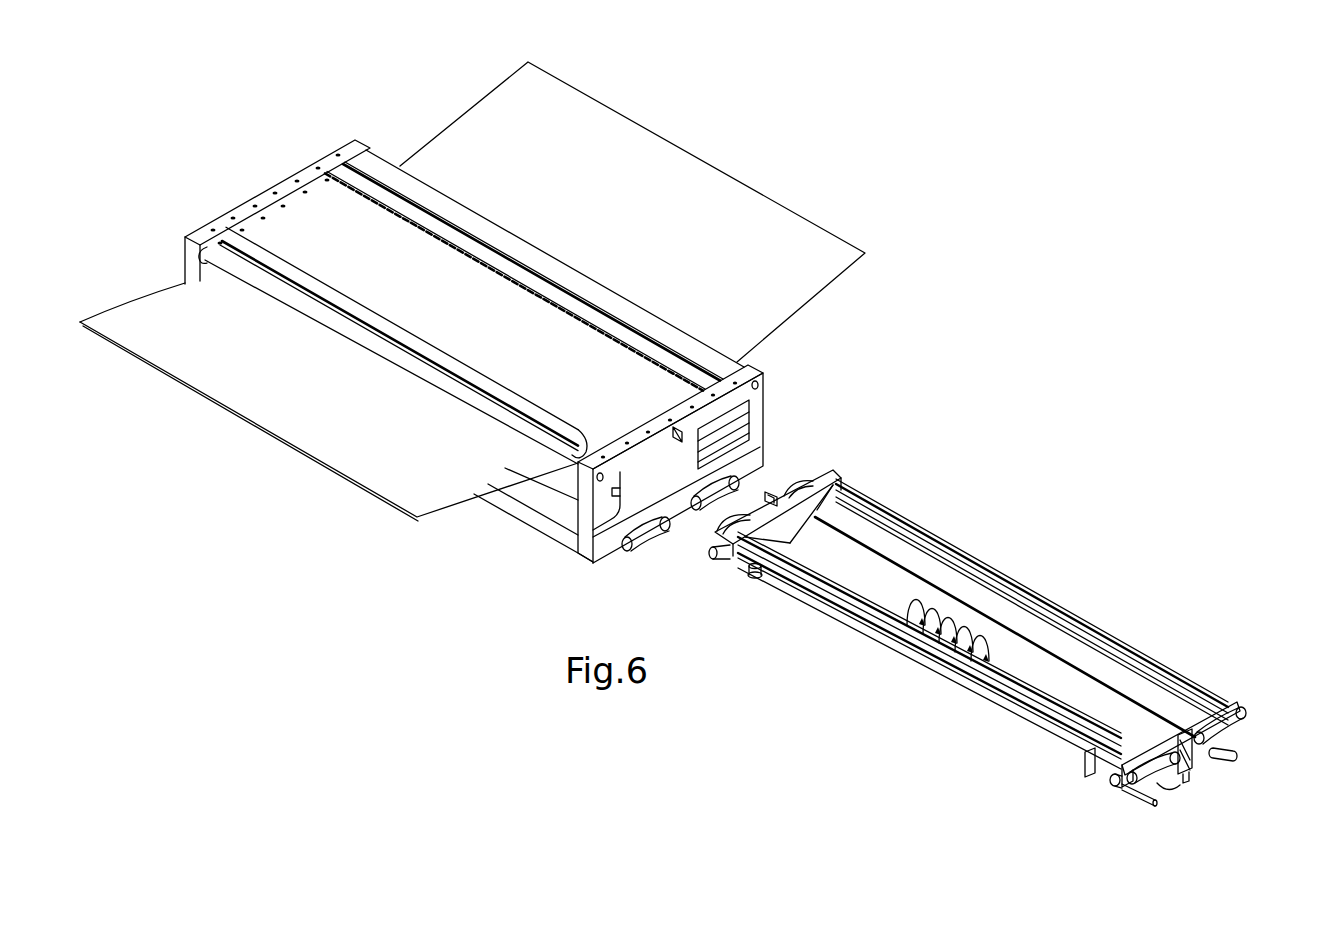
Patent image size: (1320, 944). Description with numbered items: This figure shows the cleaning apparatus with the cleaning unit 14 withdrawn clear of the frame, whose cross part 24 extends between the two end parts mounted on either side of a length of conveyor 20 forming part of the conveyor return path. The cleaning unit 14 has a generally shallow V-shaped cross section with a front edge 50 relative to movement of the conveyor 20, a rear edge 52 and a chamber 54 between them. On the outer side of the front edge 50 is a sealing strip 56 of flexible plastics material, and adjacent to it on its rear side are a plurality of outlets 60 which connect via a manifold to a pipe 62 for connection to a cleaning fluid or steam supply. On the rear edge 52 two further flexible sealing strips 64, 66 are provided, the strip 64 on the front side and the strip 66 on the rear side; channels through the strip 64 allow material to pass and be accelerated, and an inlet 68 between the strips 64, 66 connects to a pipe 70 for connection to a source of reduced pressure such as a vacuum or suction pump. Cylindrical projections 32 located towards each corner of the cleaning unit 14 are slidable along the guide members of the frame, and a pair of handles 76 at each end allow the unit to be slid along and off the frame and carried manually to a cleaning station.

The cleaning unit 14 is at (1063, 657).
The conveyor 20 is at (807, 285).
The cross part 24 is at (550, 548).
The cylindrical projections 32 is at (717, 552).
The front edge 50 is at (855, 632).
The rear edge 52 is at (960, 547).
The chamber 54 is at (845, 553).
The sealing strip 56 is at (833, 588).
The outlets 60 is at (935, 640).
The pipe 62 is at (1155, 803).
The sealing strip 64 is at (1120, 660).
The sealing strip 66 is at (1180, 677).
The inlet 68 is at (1027, 593).
The pipe 70 is at (1235, 760).
The handles 76 is at (1243, 727).